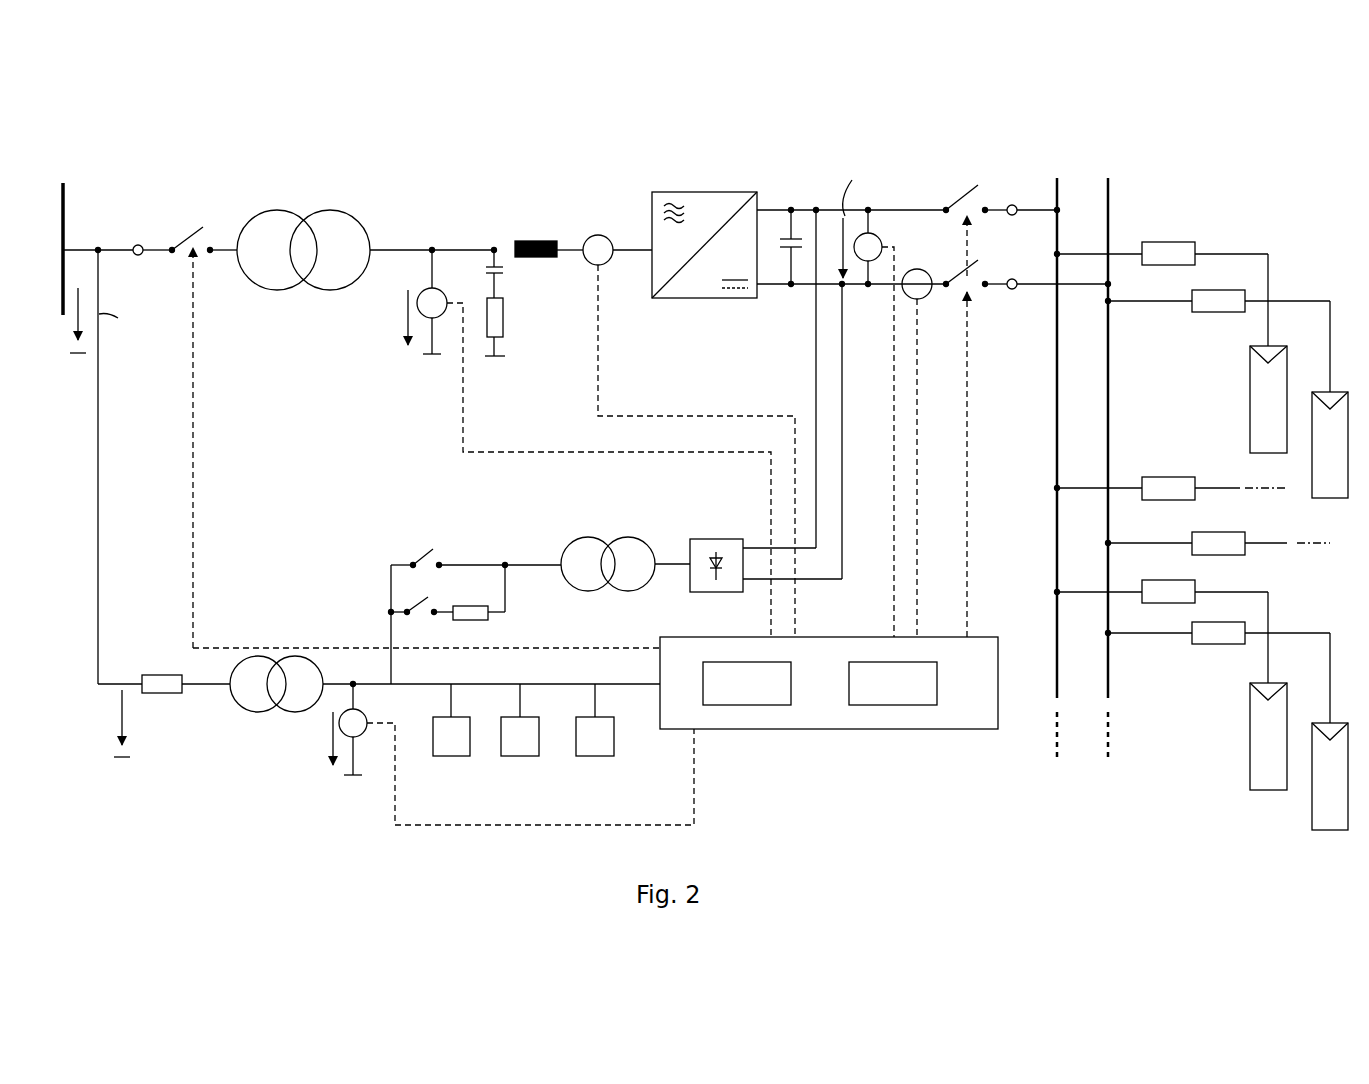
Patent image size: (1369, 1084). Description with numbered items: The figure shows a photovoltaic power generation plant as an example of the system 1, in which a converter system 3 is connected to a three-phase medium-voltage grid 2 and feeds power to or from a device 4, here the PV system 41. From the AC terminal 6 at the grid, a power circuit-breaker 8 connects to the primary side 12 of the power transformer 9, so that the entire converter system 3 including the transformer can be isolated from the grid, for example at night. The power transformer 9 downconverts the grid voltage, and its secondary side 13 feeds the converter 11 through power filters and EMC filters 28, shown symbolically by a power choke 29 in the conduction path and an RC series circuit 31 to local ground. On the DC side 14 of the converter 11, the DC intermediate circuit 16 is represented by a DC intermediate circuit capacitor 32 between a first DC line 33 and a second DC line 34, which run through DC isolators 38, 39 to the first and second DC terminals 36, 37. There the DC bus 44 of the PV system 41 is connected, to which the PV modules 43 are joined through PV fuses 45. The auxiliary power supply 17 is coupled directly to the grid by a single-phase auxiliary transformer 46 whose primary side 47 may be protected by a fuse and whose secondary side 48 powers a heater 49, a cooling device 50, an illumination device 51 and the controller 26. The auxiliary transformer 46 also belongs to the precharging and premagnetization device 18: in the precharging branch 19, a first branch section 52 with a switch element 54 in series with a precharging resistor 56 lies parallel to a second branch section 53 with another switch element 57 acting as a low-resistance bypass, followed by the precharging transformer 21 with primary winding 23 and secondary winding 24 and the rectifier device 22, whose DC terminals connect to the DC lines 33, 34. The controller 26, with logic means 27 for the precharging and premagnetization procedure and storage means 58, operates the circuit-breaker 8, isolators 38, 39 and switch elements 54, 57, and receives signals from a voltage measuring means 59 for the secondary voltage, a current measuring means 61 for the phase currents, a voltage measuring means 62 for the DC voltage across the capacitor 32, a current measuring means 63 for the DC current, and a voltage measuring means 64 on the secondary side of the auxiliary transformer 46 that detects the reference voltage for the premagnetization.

The system 1 is at (126, 137).
The grid 2 is at (68, 196).
The converter system 3 is at (109, 262).
The device 4 is at (1230, 193).
The AC terminal 6 is at (138, 243).
The circuit-breaker 8 is at (188, 227).
The power transformer 9 is at (303, 190).
The converter 11 is at (703, 192).
The primary side 12 is at (277, 210).
The secondary side 13 is at (330, 210).
The DC side 14 is at (766, 237).
The DC intermediate circuit 16 is at (800, 236).
The auxiliary power supply 17 is at (105, 686).
The precharging and premagnetization device 18 is at (452, 539).
The precharging branch 19 is at (390, 617).
The precharging transformer 21 is at (578, 538).
The rectifier device 22 is at (716, 539).
The primary winding 23 is at (196, 680).
The secondary winding 24 is at (331, 680).
The controller 26 is at (595, 714).
The logic means 27 is at (745, 706).
The power filters and EMC filters 28 is at (494, 242).
The power choke 29 is at (535, 240).
The RC series circuit 31 is at (515, 302).
The DC intermediate circuit capacitor 32 is at (787, 252).
The first DC line 33 is at (912, 208).
The second DC line 34 is at (803, 287).
The first DC terminal 36 is at (1012, 205).
The second DC terminal 37 is at (1012, 289).
The DC isolator 38 is at (958, 185).
The DC isolator 39 is at (960, 272).
The PV system 41 is at (1202, 506).
The PV modules 43 is at (1250, 398).
The DC bus 44 is at (1124, 193).
The PV fuses 45 is at (1170, 242).
The auxiliary transformer 46 is at (251, 694).
The primary side 47 is at (258, 656).
The secondary side 48 is at (295, 656).
The heater 49 is at (450, 758).
The cooling device 50 is at (520, 758).
The illumination device 51 is at (596, 758).
The first branch section 52 is at (477, 603).
The second branch section 53 is at (474, 536).
The switch element 54 is at (428, 598).
The precharging resistor 56 is at (477, 620).
The switch element 57 is at (430, 552).
The storage means 58 is at (892, 706).
The voltage measuring means 59 is at (424, 290).
The current measuring means 61 is at (598, 235).
The voltage measuring means 62 is at (868, 265).
The current measuring means 63 is at (920, 300).
The voltage measuring means 64 is at (360, 740).